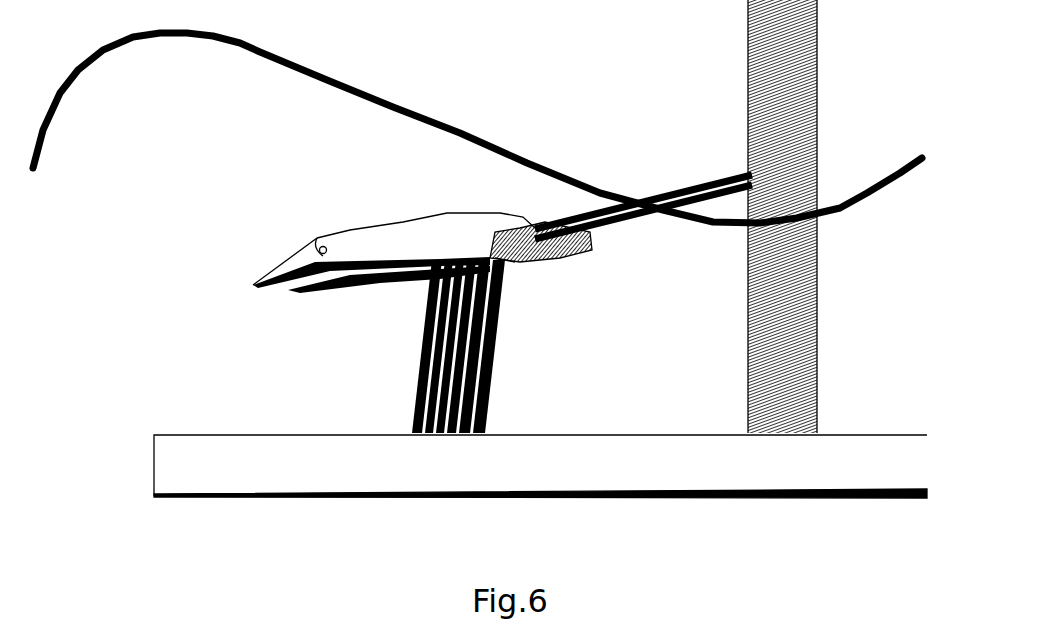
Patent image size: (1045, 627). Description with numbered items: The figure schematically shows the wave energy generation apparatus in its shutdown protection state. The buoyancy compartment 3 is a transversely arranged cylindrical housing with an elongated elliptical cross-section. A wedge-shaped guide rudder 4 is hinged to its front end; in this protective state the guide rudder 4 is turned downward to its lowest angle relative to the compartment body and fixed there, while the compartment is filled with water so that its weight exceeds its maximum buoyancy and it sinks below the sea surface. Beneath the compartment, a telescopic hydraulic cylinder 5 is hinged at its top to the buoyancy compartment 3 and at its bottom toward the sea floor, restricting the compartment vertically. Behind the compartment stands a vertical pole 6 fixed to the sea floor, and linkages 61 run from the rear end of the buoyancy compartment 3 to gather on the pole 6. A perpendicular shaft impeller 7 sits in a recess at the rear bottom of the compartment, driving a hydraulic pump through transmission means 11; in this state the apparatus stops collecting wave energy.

The buoyancy compartment 3 is at (403, 222).
The guide rudder 4 is at (283, 262).
The hydraulic cylinder 5 is at (422, 356).
The pole 6 is at (818, 300).
The perpendicular shaft impeller 7 is at (572, 257).
The transmission means 11 is at (515, 260).
The linkage 61 is at (664, 185).